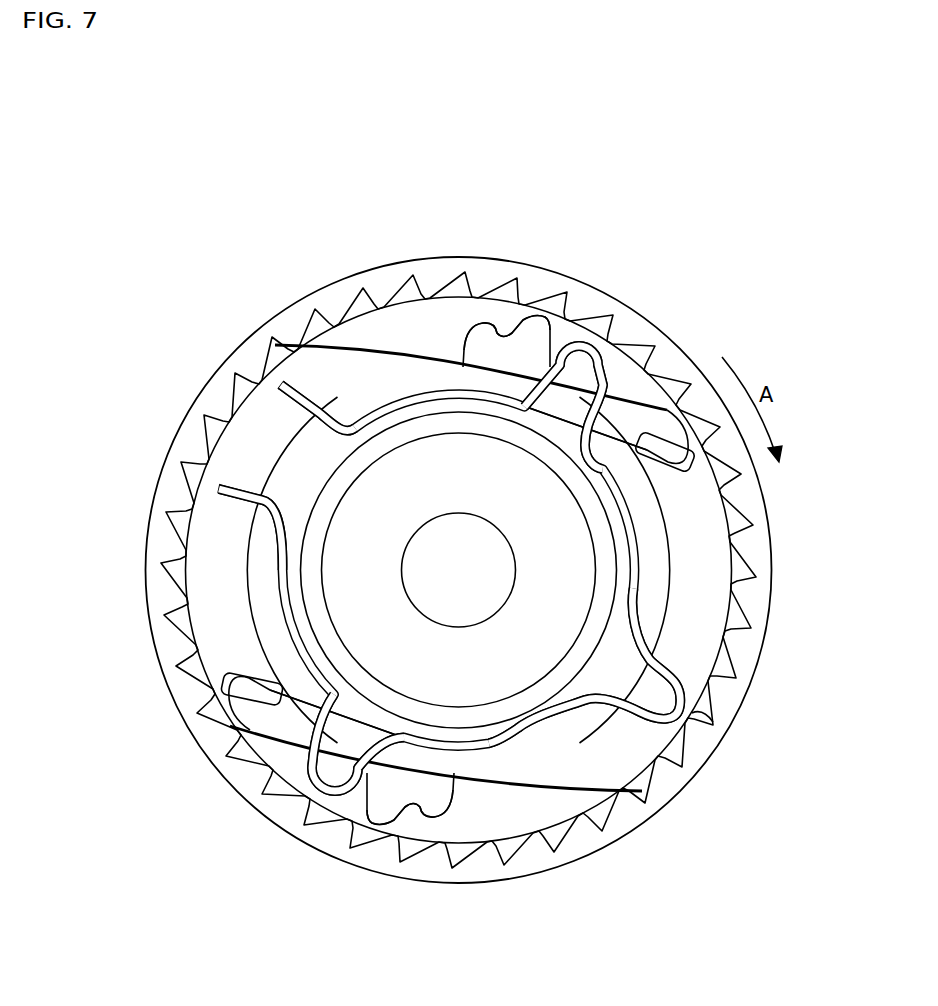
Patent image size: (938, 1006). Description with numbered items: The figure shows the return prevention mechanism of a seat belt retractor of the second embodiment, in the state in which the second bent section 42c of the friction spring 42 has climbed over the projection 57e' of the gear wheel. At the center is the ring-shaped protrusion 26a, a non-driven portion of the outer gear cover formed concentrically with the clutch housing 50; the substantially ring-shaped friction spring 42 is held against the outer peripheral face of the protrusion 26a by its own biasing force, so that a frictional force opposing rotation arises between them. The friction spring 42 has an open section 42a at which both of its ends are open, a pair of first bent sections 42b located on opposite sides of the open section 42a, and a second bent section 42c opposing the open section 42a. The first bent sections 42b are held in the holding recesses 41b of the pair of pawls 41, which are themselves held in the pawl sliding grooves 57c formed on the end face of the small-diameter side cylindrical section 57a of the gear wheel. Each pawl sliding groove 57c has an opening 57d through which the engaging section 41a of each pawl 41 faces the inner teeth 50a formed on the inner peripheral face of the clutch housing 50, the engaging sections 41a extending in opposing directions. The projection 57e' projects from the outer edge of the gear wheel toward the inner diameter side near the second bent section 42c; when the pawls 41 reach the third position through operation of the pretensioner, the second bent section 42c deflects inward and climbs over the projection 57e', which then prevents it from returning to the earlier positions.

The clutch housing 50 is at (690, 368).
The inner teeth 50a is at (428, 283).
The protrusion 26a is at (497, 733).
The friction spring 42 is at (420, 394).
The open section 42a is at (333, 436).
The first bent sections 42b is at (641, 418).
The second bent section 42c is at (697, 690).
The pawls 41 is at (648, 418).
The engaging section 41a is at (527, 337).
The holding recesses 41b is at (578, 390).
The small-diameter side cylindrical section 57a is at (697, 544).
The pawl sliding grooves 57c is at (662, 405).
The opening 57d is at (273, 347).
The projection 57e' is at (778, 699).